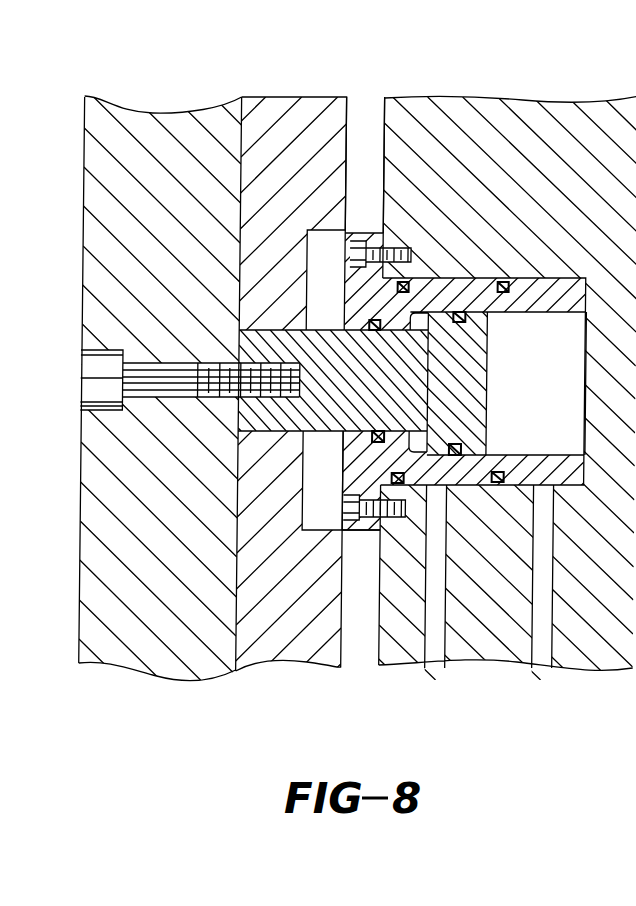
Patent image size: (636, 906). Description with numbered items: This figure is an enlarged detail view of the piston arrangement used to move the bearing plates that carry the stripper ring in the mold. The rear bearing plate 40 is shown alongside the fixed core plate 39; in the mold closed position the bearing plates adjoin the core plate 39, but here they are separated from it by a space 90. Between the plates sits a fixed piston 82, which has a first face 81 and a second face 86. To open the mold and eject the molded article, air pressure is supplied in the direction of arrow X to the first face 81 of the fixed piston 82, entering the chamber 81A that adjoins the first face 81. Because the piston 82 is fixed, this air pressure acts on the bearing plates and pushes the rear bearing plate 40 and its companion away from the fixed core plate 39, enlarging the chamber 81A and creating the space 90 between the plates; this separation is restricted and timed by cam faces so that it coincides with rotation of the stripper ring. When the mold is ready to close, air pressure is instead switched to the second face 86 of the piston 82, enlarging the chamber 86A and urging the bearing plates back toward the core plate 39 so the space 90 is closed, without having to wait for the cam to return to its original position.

The fixed core plate 39 is at (480, 130).
The rear bearing plate 40 is at (283, 125).
The space 90 is at (360, 125).
The first face 81 is at (487, 340).
The chamber 81A is at (555, 395).
The fixed piston 82 is at (307, 355).
The second face 86 is at (418, 278).
The chamber 86A is at (420, 450).
The arrow X is at (562, 438).